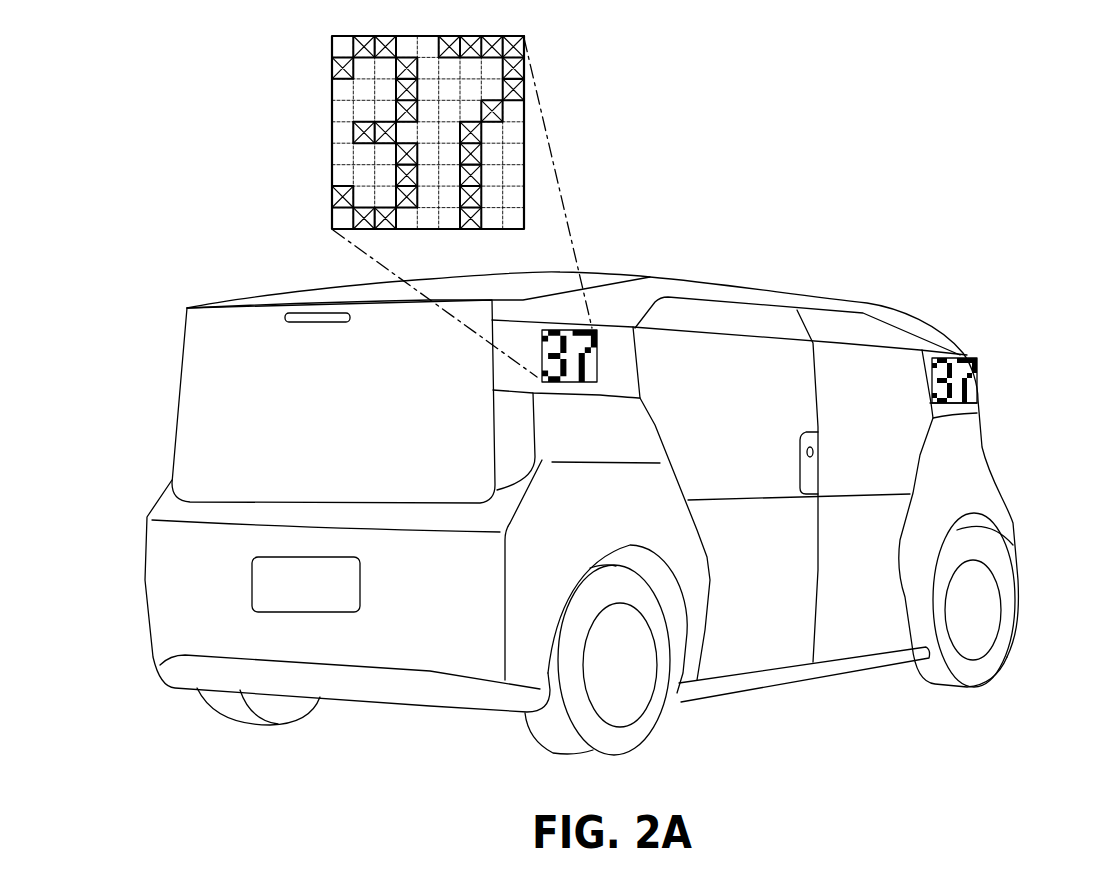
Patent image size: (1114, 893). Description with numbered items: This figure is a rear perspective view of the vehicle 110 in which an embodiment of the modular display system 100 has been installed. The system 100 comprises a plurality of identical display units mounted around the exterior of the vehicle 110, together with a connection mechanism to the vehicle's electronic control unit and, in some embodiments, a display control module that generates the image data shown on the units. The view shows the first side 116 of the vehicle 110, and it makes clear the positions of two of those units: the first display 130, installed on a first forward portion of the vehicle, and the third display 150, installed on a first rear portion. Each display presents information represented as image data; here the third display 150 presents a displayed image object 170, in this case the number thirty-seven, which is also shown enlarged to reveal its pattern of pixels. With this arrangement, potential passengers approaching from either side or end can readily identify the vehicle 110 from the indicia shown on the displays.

The modular display system 100 is at (802, 215).
The vehicle 110 is at (641, 233).
The first side 116 is at (855, 630).
The first display unit 130 is at (991, 379).
The third display unit 150 is at (606, 354).
The displayed image object 170 is at (306, 126).